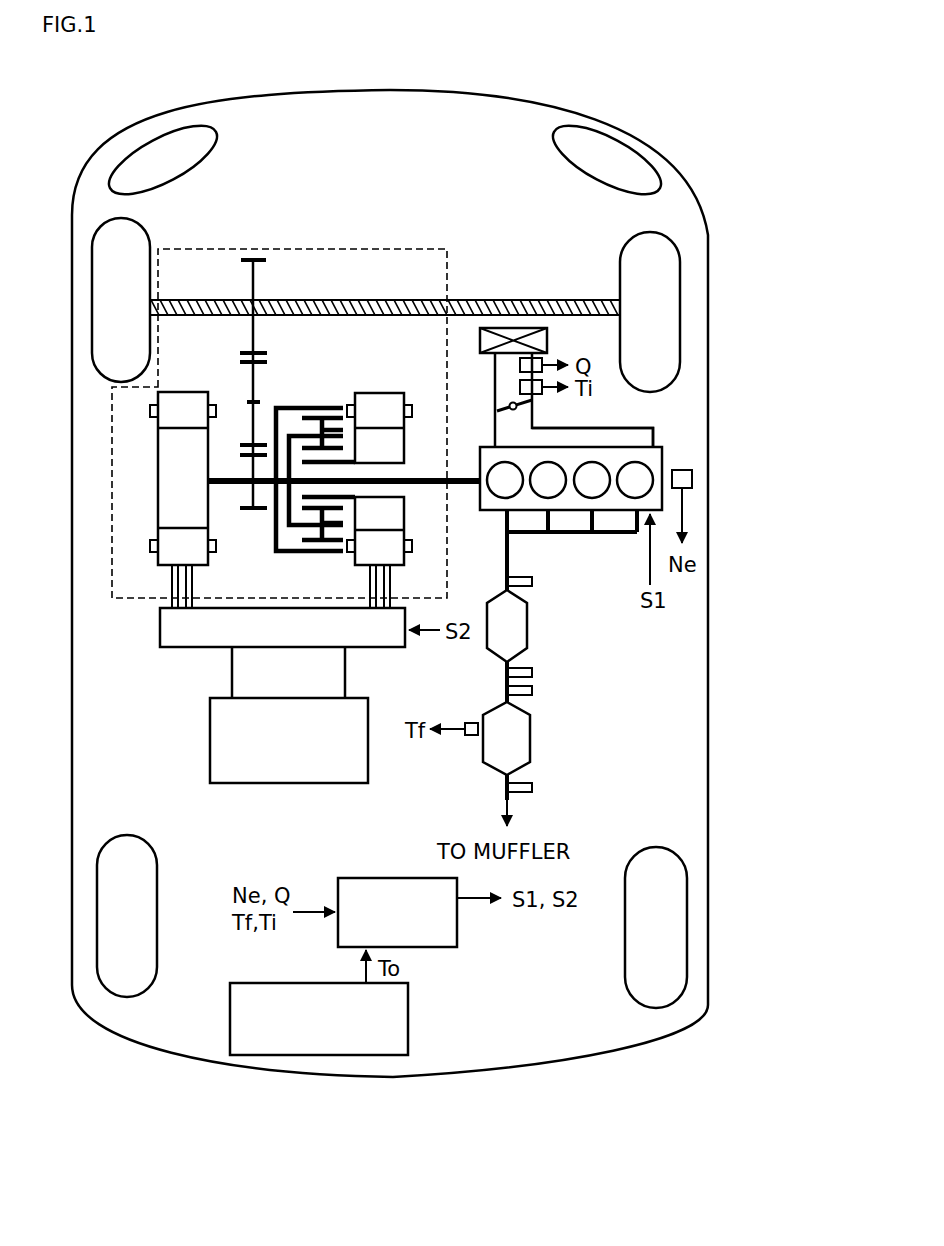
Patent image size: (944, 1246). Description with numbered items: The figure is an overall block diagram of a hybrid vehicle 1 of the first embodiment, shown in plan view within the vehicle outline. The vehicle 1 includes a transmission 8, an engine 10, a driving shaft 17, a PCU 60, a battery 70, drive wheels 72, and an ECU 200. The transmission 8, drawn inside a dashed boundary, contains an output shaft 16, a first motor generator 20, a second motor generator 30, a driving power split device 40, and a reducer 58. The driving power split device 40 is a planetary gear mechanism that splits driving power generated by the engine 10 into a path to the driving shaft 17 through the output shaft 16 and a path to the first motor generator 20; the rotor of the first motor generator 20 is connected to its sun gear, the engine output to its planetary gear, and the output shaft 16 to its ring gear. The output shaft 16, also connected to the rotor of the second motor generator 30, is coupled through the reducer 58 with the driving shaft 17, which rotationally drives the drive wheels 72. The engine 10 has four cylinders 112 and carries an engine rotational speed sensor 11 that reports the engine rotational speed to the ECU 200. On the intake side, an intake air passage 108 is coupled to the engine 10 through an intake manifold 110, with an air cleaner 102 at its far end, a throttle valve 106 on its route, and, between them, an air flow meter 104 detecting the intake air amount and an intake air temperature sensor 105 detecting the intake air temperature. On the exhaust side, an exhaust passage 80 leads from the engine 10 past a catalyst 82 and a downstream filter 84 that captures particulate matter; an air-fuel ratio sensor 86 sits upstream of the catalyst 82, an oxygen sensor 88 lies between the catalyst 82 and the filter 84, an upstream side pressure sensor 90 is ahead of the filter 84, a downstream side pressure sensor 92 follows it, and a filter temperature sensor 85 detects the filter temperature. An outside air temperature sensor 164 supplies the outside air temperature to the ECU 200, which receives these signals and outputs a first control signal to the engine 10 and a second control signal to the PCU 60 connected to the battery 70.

The hybrid vehicle 1 is at (380, 60).
The transmission 8 is at (323, 249).
The engine 10 is at (619, 494).
The engine rotational speed sensor 11 is at (692, 479).
The output shaft 16 is at (272, 485).
The driving shaft 17 is at (458, 300).
The first motor generator 20 is at (371, 393).
The second motor generator 30 is at (185, 392).
The driving power split device 40 is at (322, 390).
The reducer 58 is at (253, 260).
The PCU 60 is at (160, 626).
The battery 70 is at (210, 742).
The drive wheels 72 is at (636, 235).
The exhaust passage 80 is at (615, 534).
The catalyst 82 is at (528, 630).
The filter 84 is at (531, 740).
The filter temperature sensor 85 is at (470, 723).
The air-fuel ratio sensor 86 is at (532, 581).
The oxygen sensor 88 is at (532, 672).
The upstream side pressure sensor 90 is at (532, 690).
The downstream side pressure sensor 92 is at (532, 787).
The air cleaner 102 is at (497, 328).
The air flow meter 104 is at (545, 358).
The intake air temperature sensor 105 is at (520, 365).
The throttle valve 106 is at (520, 387).
The intake air passage 108 is at (533, 414).
The intake manifold 110 is at (640, 428).
The cylinders 112 is at (553, 492).
The outside air temperature sensor 164 is at (408, 1012).
The ECU 200 is at (400, 878).